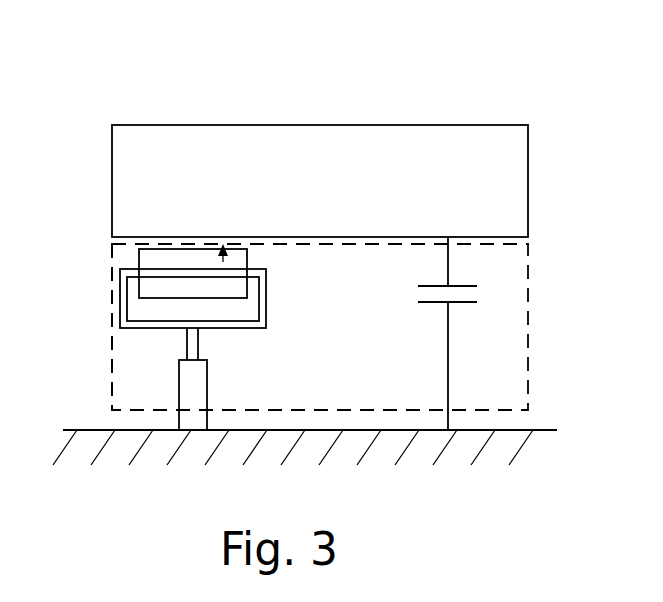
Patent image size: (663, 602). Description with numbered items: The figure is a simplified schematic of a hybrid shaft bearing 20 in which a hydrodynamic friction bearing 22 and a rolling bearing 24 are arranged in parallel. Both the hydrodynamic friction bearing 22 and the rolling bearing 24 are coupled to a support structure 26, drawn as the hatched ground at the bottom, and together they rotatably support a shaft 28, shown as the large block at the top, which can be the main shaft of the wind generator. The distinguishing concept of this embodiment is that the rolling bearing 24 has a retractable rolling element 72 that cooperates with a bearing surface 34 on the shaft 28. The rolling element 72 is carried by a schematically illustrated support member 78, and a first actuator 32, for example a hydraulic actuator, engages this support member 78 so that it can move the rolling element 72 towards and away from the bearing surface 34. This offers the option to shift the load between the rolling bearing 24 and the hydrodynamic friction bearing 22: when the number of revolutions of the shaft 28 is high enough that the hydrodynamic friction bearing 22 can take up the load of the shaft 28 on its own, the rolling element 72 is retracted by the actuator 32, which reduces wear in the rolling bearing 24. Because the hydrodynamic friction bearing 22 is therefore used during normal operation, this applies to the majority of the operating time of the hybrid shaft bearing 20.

The hybrid shaft bearing 20 is at (530, 301).
The hydrodynamic friction bearing 22 is at (491, 284).
The rolling bearing 24 is at (104, 322).
The support structure 26 is at (540, 430).
The shaft 28 is at (453, 125).
The first actuator 32 is at (207, 394).
The bearing surface 34 is at (223, 254).
The rolling element 72 is at (170, 258).
The support member 78 is at (148, 330).